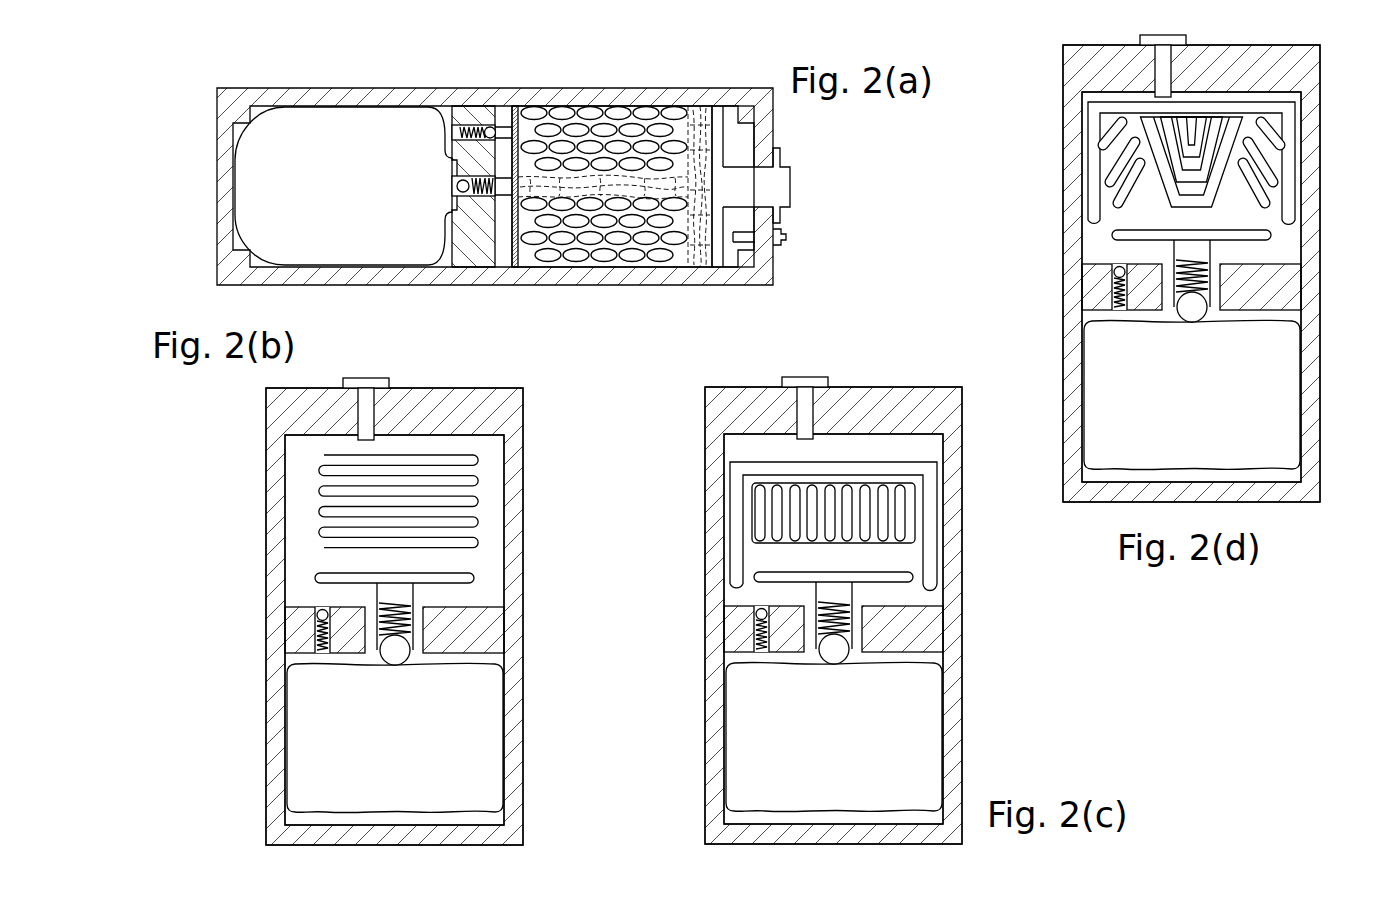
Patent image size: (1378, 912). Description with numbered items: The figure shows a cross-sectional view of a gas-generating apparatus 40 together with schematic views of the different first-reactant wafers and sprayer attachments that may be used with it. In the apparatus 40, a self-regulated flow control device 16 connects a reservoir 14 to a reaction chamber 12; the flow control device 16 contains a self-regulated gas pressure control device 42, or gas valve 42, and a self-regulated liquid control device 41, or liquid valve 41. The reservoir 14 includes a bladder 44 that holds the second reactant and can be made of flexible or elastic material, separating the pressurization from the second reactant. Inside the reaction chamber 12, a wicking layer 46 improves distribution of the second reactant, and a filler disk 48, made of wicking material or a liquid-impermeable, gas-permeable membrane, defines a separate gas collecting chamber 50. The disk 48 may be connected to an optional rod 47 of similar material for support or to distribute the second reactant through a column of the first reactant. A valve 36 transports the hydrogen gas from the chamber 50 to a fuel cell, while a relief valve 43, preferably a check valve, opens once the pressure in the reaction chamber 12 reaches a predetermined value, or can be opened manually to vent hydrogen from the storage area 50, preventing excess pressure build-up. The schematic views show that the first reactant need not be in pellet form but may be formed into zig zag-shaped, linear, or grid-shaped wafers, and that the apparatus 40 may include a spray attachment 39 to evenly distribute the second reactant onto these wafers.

In FIG. 2A, the reaction chamber 12 is at (623, 125).
In FIG. 2A, the reservoir 14 is at (441, 122).
In FIG. 2A, the self-regulated flow control device 16 is at (521, 294).
In FIG. 2A, the valve 36 is at (778, 178).
In FIG. 2B, the spray attachment 39 is at (441, 519).
In FIG. 2C, the spray attachment 39 is at (867, 526).
In FIG. 2D, the spray attachment 39 is at (1224, 171).
In FIG. 2A, the gas-generating apparatus 40 is at (228, 72).
In FIG. 2A, the self-regulated liquid control device 41 is at (481, 200).
In FIG. 2B, the self-regulated liquid control device 41 is at (309, 668).
In FIG. 2C, the self-regulated liquid control device 41 is at (747, 666).
In FIG. 2D, the self-regulated liquid control device 41 is at (1105, 324).
In FIG. 2A, the self-regulated gas pressure control device 42 is at (471, 124).
In FIG. 2B, the self-regulated gas pressure control device 42 is at (269, 645).
In FIG. 2C, the self-regulated gas pressure control device 42 is at (707, 644).
In FIG. 2D, the self-regulated gas pressure control device 42 is at (1066, 302).
In FIG. 2A, the relief valve 43 is at (786, 237).
In FIG. 2A, the bladder 44 is at (356, 125).
In FIG. 2A, the wicking layer 46 is at (517, 108).
In FIG. 2A, the rod 47 is at (661, 212).
In FIG. 2A, the filler disk 48 is at (696, 120).
In FIG. 2A, the gas collecting chamber 50 is at (724, 118).